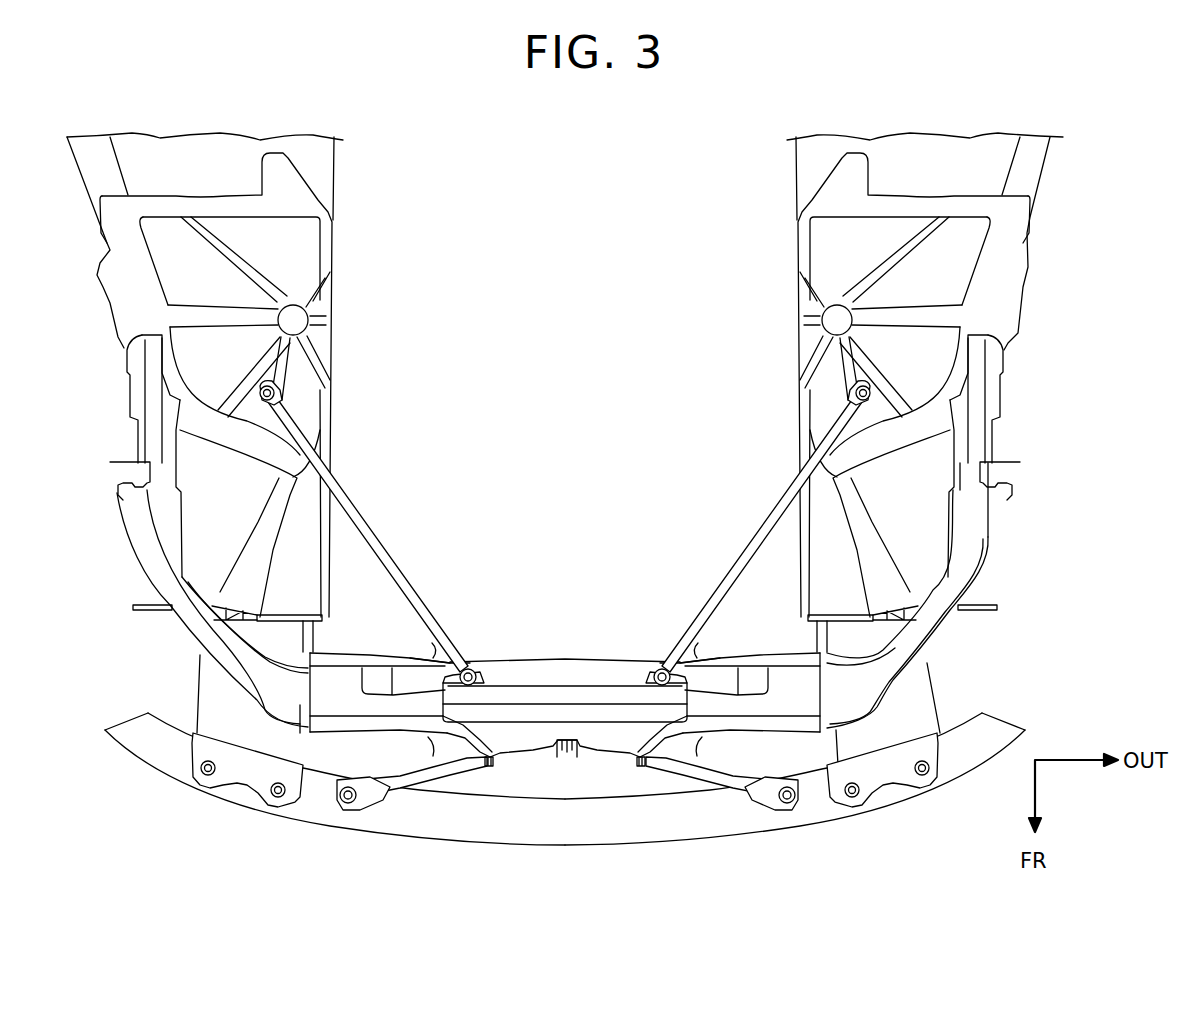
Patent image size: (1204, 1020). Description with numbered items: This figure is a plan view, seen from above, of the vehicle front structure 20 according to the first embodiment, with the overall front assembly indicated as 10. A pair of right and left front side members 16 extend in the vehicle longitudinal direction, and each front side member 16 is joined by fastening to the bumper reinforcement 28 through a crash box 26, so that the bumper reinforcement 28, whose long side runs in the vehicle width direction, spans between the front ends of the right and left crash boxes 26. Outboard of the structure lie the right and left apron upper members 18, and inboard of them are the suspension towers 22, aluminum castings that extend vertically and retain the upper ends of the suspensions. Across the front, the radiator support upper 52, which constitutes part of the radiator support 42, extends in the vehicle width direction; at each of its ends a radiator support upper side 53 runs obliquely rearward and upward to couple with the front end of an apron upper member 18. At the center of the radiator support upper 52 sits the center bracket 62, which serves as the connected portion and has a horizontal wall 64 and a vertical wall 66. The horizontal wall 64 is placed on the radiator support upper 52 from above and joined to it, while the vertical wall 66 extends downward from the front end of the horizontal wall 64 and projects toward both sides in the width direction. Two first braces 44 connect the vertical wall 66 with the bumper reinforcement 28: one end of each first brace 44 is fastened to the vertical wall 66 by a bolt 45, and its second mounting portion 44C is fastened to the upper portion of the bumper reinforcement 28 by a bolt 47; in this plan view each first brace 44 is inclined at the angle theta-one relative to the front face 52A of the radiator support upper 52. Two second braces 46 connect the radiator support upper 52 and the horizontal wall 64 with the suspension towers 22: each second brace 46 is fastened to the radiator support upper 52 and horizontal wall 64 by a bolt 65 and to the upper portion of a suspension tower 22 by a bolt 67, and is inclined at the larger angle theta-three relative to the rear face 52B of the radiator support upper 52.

The vehicle front structure 10 is at (1088, 241).
The front side member 16 is at (317, 438).
The apron upper member 18 is at (148, 392).
The vehicle front structure 20 is at (590, 767).
The suspension tower 22 is at (297, 262).
The crash box 26 is at (207, 695).
The bumper reinforcement 28 is at (127, 718).
The radiator support 42 is at (350, 652).
The first brace 44 is at (435, 788).
The second mounting portion 44C is at (365, 810).
The bolt 45 is at (492, 772).
The second brace 46 is at (398, 529).
The bolt 47 is at (337, 800).
The radiator support upper 52 is at (367, 660).
The front face 52A is at (365, 737).
The rear face 52B is at (413, 657).
The radiator support upper side 53 is at (160, 557).
The center bracket 62 is at (553, 673).
The horizontal wall 64 is at (598, 673).
The bolt 65 is at (483, 671).
The vertical wall 66 is at (540, 740).
The bolt 67 is at (280, 387).